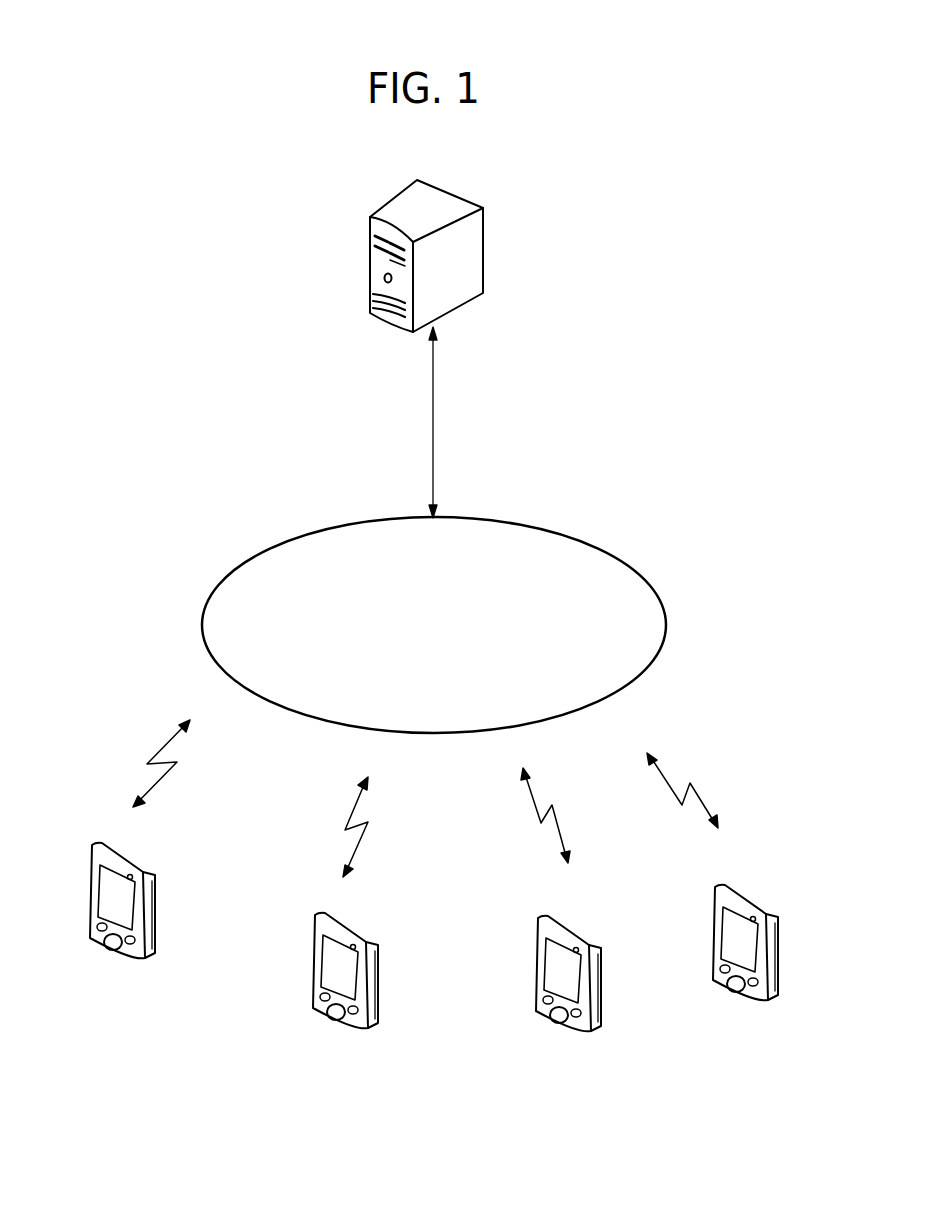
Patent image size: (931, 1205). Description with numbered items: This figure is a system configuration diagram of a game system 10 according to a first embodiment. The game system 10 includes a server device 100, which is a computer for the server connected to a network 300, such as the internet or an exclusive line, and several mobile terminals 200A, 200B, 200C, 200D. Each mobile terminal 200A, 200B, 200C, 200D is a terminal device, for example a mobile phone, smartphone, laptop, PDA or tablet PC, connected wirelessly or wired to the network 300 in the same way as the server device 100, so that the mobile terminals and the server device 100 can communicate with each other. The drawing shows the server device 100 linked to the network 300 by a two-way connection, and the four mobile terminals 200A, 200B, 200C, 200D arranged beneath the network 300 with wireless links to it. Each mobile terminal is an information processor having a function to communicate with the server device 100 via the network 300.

The game system 10 is at (622, 262).
The server device 100 is at (368, 230).
The network 300 is at (222, 580).
The mobile terminal 200A is at (90, 857).
The mobile terminal 200B is at (313, 927).
The mobile terminal 200C is at (537, 928).
The mobile terminal 200D is at (714, 897).